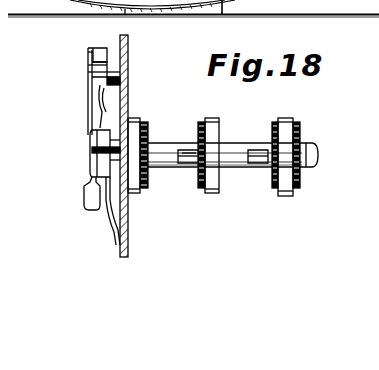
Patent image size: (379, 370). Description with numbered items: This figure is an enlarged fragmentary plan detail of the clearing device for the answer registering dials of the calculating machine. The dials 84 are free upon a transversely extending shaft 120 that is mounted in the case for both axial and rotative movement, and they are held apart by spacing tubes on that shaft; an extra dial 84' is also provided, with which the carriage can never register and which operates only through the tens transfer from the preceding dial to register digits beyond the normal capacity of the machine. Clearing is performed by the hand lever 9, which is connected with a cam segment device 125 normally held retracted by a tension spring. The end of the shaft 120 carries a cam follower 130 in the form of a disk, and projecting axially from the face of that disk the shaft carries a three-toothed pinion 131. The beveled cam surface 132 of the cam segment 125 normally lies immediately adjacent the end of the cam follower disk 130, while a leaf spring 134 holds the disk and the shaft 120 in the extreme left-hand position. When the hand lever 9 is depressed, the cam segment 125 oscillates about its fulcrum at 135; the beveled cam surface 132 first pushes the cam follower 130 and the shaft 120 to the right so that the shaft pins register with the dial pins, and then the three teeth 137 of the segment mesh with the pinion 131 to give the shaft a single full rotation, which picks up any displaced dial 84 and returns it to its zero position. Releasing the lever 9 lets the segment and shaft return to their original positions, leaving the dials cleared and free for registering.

The hand lever 9 is at (92, 192).
The dials 84 is at (203, 181).
The extra dial 84' is at (149, 188).
The shaft 120 is at (313, 152).
The cam segment device 125 is at (97, 70).
The cam follower 130 is at (93, 163).
The three-toothed pinion 131 is at (93, 140).
The beveled cam surface 132 is at (102, 108).
The leaf spring 134 is at (110, 203).
The fulcrum 135 is at (113, 70).
The three teeth 137 is at (98, 60).